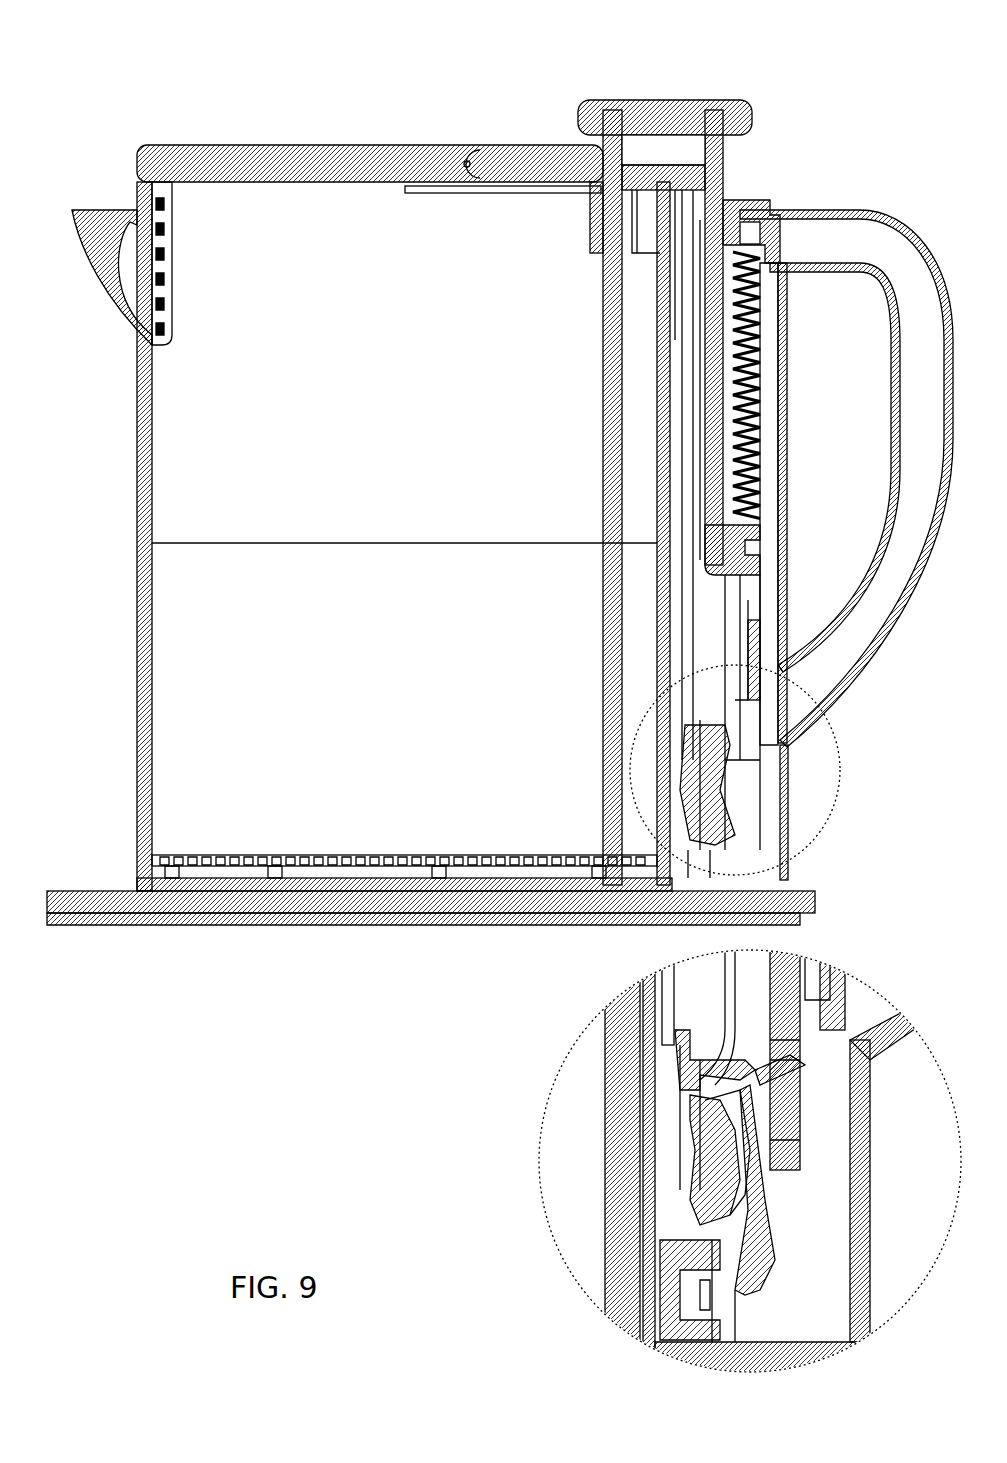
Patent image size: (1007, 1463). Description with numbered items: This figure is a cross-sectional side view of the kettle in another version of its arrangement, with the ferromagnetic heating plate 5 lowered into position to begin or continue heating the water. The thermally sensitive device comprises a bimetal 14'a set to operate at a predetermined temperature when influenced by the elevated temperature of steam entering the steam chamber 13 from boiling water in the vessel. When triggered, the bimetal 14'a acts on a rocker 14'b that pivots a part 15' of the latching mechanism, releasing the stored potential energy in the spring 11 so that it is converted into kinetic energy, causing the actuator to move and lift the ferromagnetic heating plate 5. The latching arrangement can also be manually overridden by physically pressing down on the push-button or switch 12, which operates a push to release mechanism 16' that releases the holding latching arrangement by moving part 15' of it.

The ferromagnetic heating plate 5 is at (230, 855).
The spring 11 is at (767, 290).
The push-button or switch 12 is at (690, 100).
The steam chamber 13 is at (680, 295).
The push to release mechanism 16' is at (820, 956).
The part of the latching mechanism 15' is at (600, 1110).
The bimetal 14'a is at (590, 1157).
The rocker 14'b is at (602, 1213).